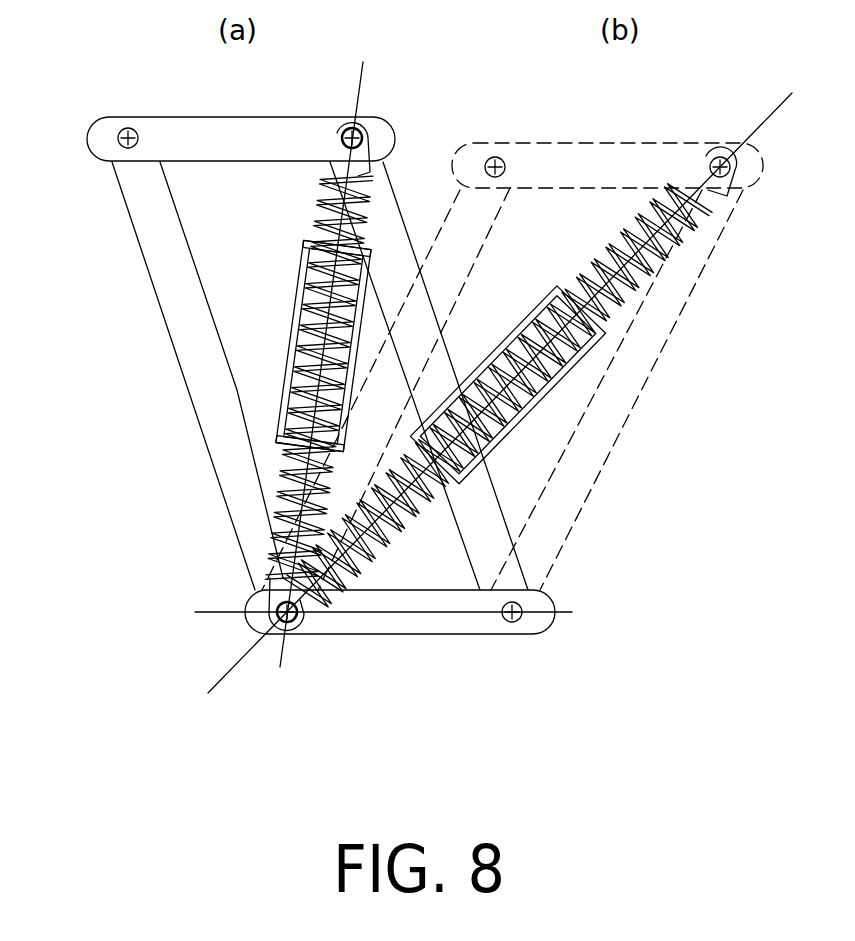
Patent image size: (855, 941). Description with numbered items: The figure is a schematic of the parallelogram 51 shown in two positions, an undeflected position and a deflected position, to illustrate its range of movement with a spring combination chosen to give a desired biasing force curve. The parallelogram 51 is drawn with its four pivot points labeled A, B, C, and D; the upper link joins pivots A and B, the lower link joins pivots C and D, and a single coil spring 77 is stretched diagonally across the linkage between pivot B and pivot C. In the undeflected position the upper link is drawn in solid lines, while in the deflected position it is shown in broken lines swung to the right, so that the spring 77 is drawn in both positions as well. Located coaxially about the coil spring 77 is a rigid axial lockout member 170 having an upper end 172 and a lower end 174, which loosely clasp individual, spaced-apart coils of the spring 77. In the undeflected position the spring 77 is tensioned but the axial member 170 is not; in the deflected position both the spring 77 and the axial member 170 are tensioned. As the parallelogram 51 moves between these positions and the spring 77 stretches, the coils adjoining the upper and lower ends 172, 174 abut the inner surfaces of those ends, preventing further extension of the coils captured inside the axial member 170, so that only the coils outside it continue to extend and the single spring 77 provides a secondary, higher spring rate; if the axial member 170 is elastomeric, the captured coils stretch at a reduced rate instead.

The parallelogram 51 is at (160, 432).
The coil spring 77 is at (325, 202).
The axial lockout member 170 is at (298, 287).
The upper end 172 is at (307, 247).
The lower end 174 is at (283, 447).
The pivot A is at (130, 128).
The pivot B is at (357, 133).
The pivot C is at (302, 632).
The pivot D is at (538, 637).